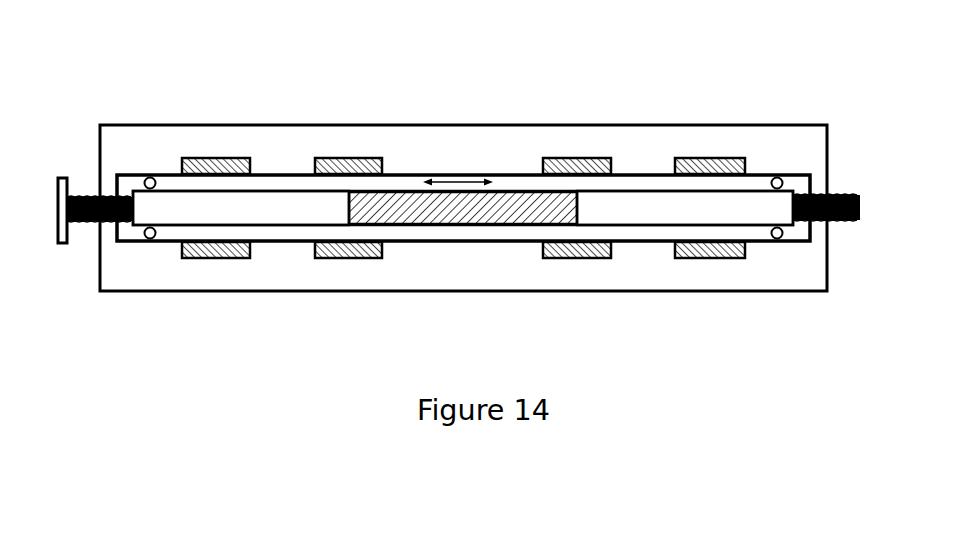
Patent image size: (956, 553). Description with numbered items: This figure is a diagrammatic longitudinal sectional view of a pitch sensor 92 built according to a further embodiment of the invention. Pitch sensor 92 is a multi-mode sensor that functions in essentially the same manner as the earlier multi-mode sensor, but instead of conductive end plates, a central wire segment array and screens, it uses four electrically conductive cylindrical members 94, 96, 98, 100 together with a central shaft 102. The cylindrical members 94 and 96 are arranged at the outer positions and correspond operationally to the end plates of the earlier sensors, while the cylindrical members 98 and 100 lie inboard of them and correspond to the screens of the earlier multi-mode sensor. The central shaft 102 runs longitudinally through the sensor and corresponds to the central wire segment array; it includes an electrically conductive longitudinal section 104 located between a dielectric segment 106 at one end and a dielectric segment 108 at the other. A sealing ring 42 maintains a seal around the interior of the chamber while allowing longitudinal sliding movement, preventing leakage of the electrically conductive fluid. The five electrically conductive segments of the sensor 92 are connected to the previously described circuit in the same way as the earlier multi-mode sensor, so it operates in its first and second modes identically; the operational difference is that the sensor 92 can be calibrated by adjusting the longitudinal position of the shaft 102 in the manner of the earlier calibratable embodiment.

The pitch sensor 92 is at (495, 72).
The electrically conductive cylindrical member 94 is at (217, 158).
The electrically conductive cylindrical member 96 is at (693, 157).
The electrically conductive cylindrical member 98 is at (345, 158).
The electrically conductive cylindrical member 100 is at (572, 157).
The central shaft 102 is at (297, 215).
The electrically conductive longitudinal section 104 is at (487, 213).
The dielectric segment 106 is at (175, 213).
The dielectric segment 108 is at (747, 213).
The sealing ring 42 is at (777, 177).